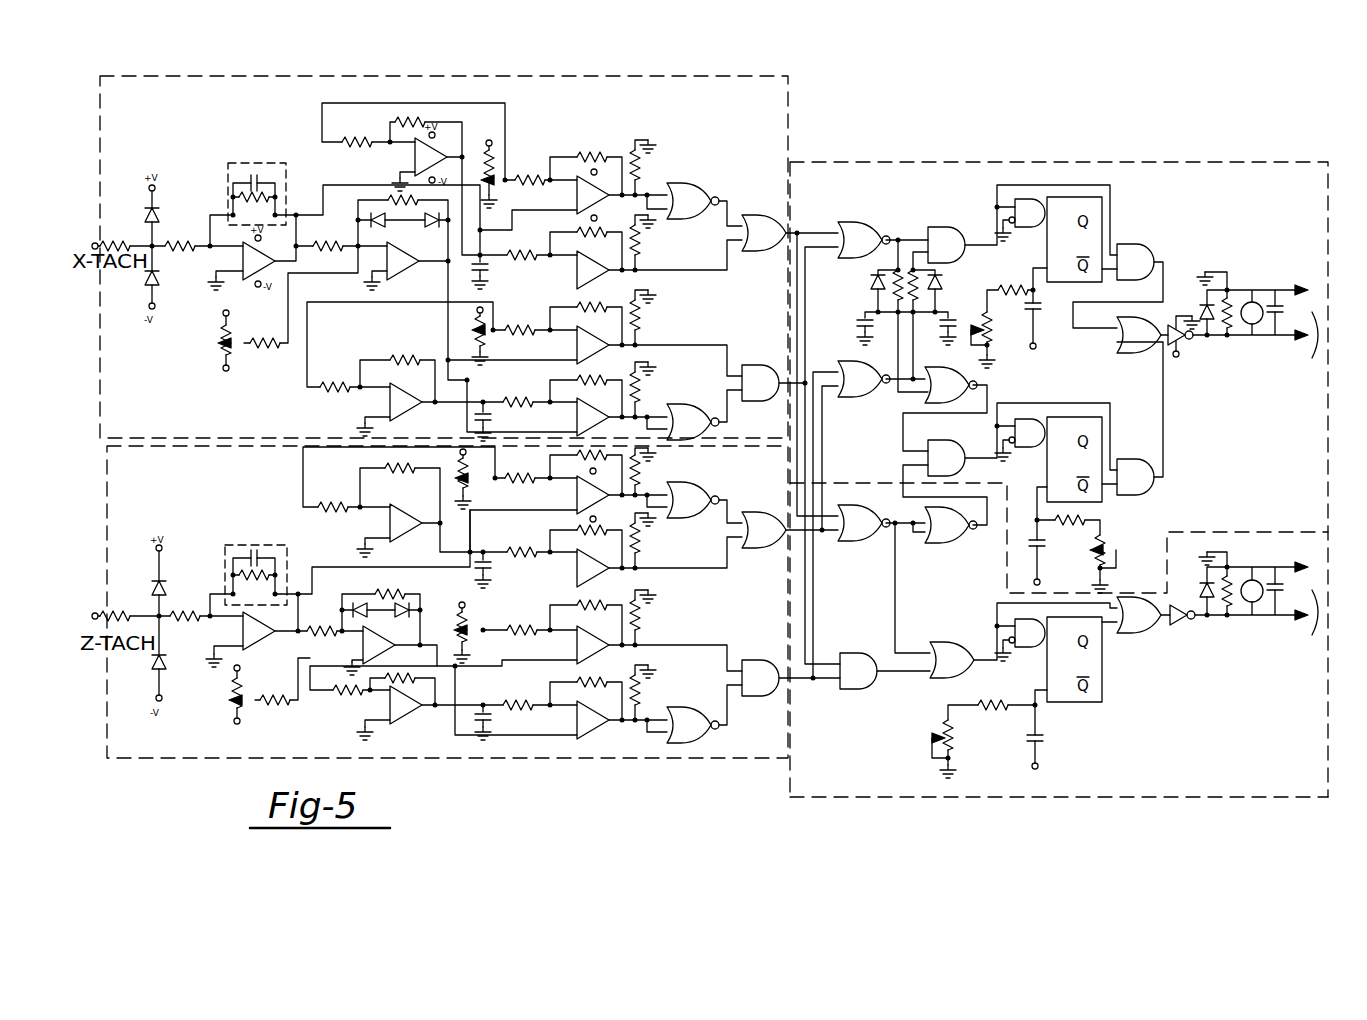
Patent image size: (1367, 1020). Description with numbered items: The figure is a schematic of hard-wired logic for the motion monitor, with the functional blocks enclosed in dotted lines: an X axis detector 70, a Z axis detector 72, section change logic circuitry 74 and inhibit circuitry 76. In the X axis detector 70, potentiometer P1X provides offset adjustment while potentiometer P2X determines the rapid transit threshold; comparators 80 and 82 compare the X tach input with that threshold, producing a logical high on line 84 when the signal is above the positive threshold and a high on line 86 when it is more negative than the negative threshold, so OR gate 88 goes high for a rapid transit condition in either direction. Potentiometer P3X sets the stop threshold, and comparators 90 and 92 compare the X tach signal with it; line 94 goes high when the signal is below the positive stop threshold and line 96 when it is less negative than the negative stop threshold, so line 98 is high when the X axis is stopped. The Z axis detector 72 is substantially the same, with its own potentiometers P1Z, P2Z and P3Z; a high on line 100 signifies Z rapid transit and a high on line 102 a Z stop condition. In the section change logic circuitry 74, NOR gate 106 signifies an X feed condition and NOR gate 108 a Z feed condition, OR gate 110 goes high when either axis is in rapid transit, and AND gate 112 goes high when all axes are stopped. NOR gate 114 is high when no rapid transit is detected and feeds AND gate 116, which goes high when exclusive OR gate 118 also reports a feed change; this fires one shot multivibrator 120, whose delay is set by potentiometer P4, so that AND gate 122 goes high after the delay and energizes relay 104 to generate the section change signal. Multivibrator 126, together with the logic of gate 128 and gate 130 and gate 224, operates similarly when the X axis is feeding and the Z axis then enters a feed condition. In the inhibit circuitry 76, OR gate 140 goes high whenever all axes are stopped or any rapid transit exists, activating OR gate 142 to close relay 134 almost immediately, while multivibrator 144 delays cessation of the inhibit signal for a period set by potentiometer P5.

The X axis detector 70 is at (792, 96).
The Z axis detector 72 is at (626, 762).
The section change logic circuitry 74 is at (1110, 160).
The inhibit circuitry 76 is at (1075, 797).
The comparator 80 is at (575, 182).
The comparator 82 is at (583, 272).
The line 84 is at (712, 200).
The line 86 is at (670, 270).
The OR gate 88 is at (752, 252).
The comparator 90 is at (600, 350).
The comparator 92 is at (603, 412).
The line 94 is at (714, 347).
The line 96 is at (730, 428).
The line 98 is at (806, 352).
The line 100 is at (790, 540).
The line 102 is at (788, 690).
The relay 104 is at (1265, 282).
The NOR gate 106 is at (862, 232).
The NOR gate 108 is at (862, 399).
The OR gate 110 is at (862, 541).
The AND gate 112 is at (858, 681).
The NOR gate 114 is at (958, 543).
The AND gate 116 is at (926, 455).
The exclusive OR gate 118 is at (972, 382).
The one shot multivibrator 120 is at (1092, 452).
The AND gate 122 is at (1150, 486).
The multivibrator 126 is at (1095, 232).
The AND gate 128 is at (1140, 260).
The gate 130 is at (941, 235).
The relay 134 is at (1260, 566).
The OR gate 140 is at (949, 643).
The OR gate 142 is at (1152, 626).
The multivibrator 144 is at (1075, 700).
The OR gate 224 is at (1152, 352).
The potentiometer P1X is at (222, 347).
The potentiometer P2X is at (497, 178).
The potentiometer P3X is at (478, 330).
The potentiometer P1Z is at (235, 707).
The potentiometer P2Z is at (473, 477).
The potentiometer P3Z is at (480, 630).
The potentiometer P4 is at (1105, 538).
The potentiometer P5 is at (950, 748).